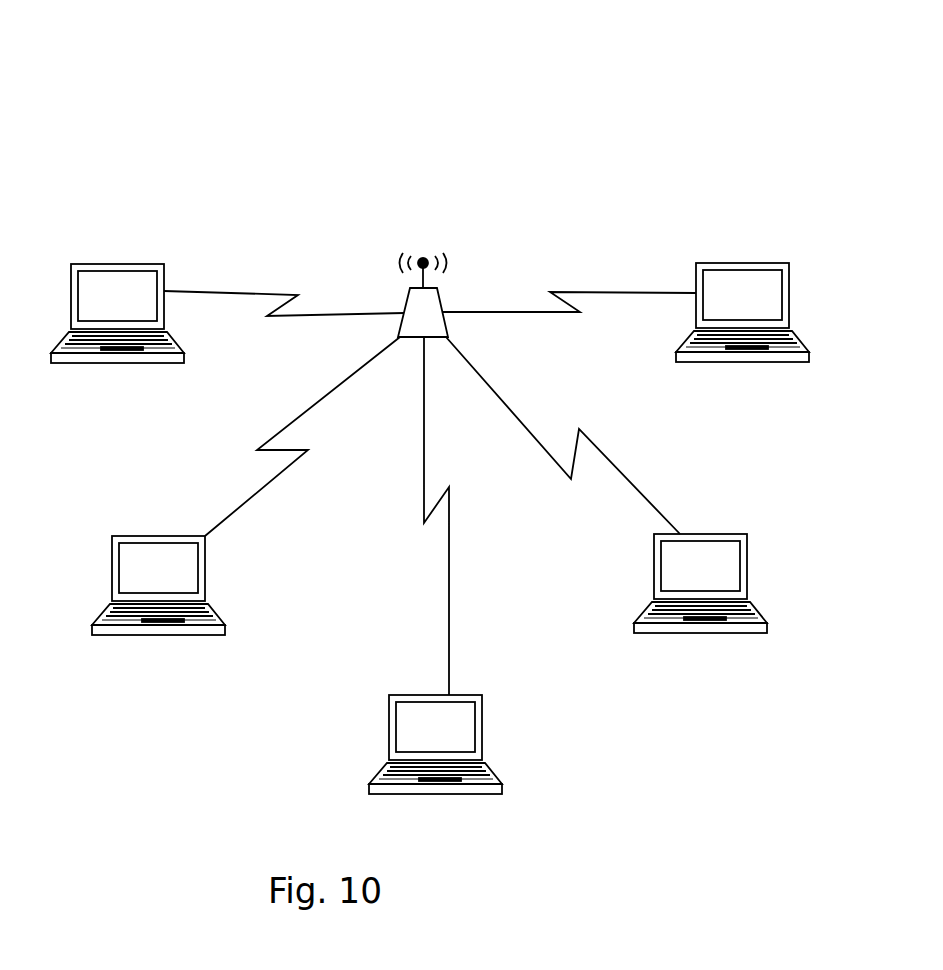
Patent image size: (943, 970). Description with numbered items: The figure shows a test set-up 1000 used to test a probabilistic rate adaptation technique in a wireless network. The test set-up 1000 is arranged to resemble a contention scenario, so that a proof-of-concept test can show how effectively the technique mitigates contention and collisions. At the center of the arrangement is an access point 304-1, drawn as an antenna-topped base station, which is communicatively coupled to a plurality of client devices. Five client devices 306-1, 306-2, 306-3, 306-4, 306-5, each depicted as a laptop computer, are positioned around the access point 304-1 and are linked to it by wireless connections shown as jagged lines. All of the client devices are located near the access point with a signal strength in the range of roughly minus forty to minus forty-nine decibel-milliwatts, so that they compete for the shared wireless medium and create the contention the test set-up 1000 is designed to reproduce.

The test set-up 1000 is at (218, 78).
The access point 304-1 is at (413, 252).
The client device 306-1 is at (69, 253).
The client device 306-2 is at (205, 638).
The client device 306-3 is at (475, 798).
The client device 306-4 is at (740, 635).
The client device 306-5 is at (777, 363).